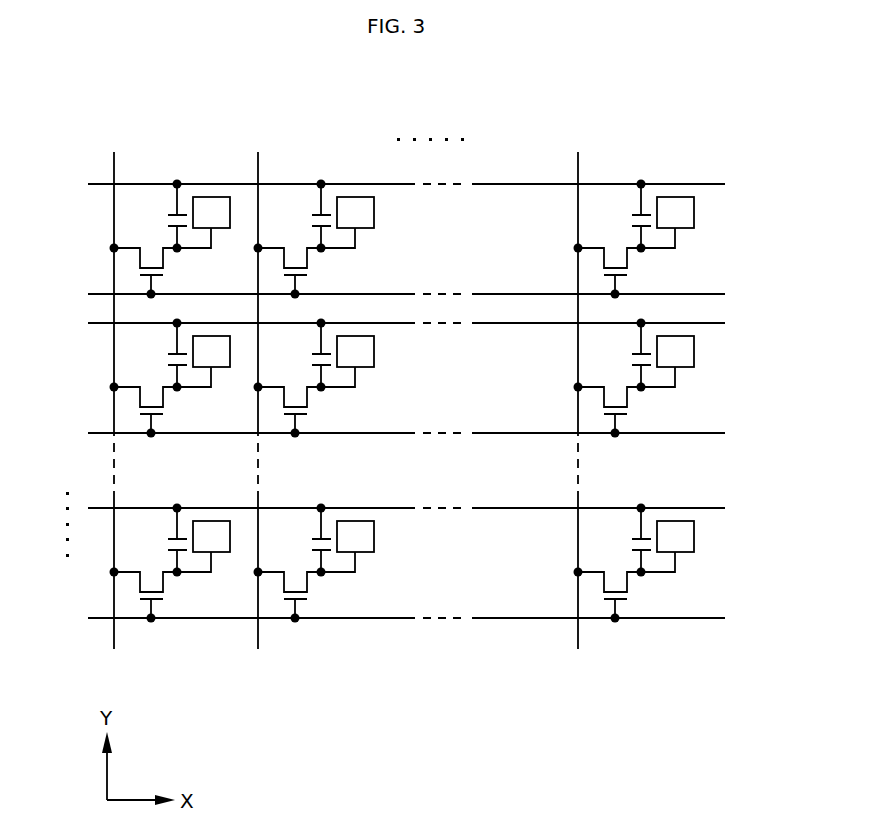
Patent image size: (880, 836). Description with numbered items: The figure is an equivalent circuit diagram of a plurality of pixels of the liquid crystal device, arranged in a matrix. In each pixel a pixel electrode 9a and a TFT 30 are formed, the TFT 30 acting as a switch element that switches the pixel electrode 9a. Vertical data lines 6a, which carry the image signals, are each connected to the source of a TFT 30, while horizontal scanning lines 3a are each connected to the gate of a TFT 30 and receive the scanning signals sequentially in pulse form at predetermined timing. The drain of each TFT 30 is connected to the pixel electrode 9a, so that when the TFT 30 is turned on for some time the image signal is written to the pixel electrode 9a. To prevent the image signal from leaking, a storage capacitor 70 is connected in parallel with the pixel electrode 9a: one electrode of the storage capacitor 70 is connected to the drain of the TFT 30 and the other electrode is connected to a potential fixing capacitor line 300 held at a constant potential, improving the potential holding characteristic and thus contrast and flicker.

The data line 6a is at (115, 163).
The capacitor line 300 is at (712, 187).
The scanning line 3a is at (713, 295).
The storage capacitor 70 is at (167, 224).
The pixel electrode 9a is at (688, 218).
The TFT 30 is at (132, 263).